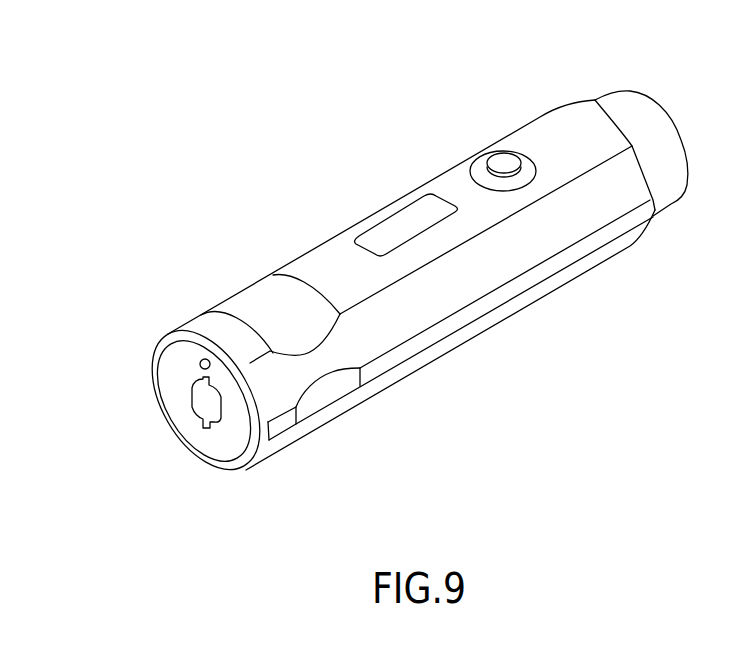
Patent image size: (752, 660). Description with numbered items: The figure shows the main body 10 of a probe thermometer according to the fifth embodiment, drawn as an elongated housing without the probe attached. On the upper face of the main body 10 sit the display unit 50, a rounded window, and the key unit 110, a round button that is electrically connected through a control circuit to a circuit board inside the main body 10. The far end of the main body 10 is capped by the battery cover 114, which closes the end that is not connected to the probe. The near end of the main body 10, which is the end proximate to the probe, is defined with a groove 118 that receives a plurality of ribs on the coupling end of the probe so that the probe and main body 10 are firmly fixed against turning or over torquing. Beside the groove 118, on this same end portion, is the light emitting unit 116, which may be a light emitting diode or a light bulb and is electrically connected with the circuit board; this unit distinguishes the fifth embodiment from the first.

The main body 10 is at (303, 254).
The display unit 50 is at (402, 225).
The key unit 110 is at (503, 162).
The battery cover 114 is at (645, 113).
The light emitting unit 116 is at (200, 363).
The groove 118 is at (197, 401).